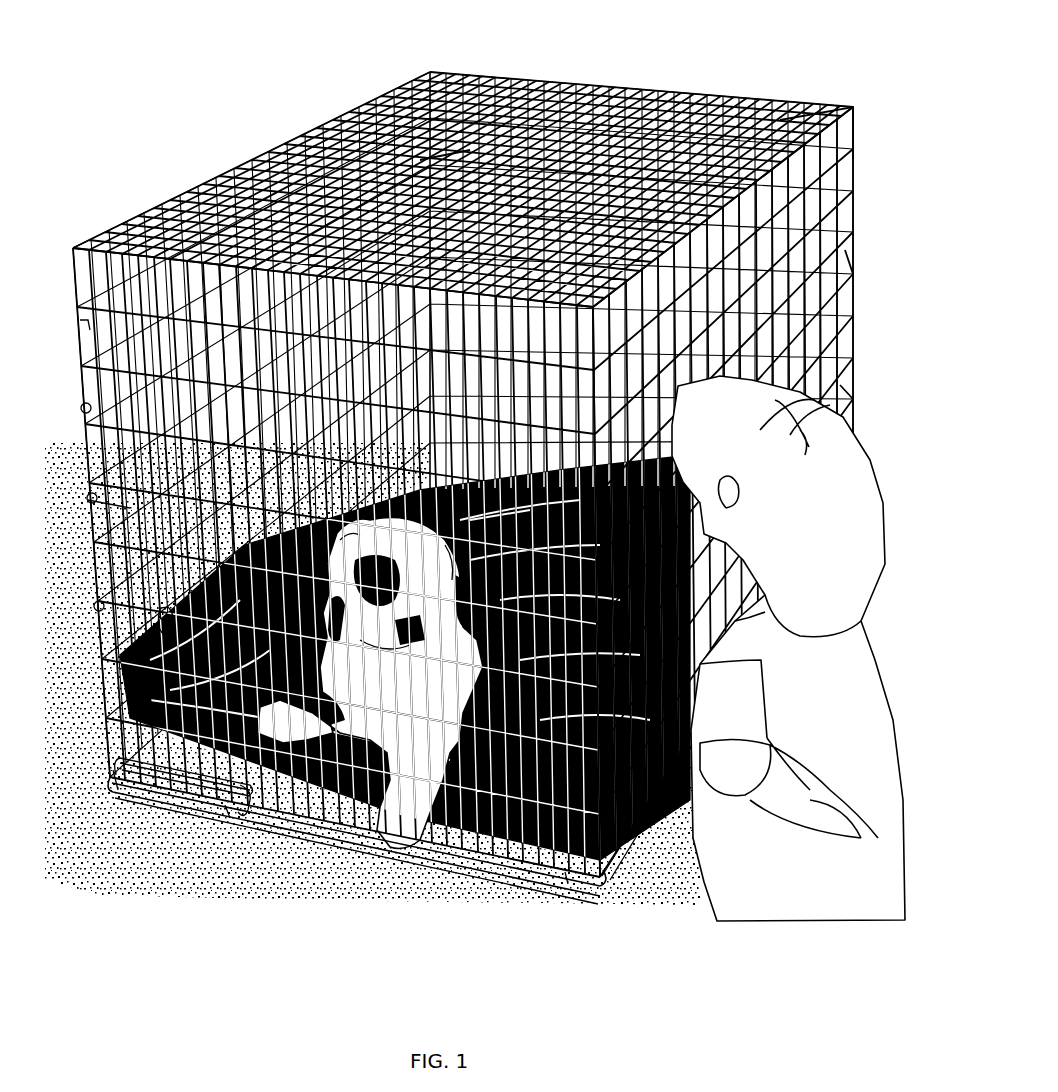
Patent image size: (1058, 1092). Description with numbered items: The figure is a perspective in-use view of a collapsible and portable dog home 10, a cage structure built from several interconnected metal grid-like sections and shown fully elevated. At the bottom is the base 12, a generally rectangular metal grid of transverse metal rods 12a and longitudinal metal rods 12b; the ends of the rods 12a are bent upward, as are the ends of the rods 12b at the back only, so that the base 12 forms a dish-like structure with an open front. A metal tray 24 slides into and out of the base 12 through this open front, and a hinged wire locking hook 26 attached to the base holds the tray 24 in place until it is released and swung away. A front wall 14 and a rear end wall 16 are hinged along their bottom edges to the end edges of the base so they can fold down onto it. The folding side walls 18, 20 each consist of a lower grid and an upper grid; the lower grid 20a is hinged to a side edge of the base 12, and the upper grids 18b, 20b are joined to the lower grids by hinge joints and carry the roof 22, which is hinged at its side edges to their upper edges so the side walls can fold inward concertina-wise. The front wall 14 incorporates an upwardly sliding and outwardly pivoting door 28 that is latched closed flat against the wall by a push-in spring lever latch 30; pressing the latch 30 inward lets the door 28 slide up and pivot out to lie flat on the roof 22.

The dog home 10 is at (473, 438).
The base 12 is at (394, 858).
The transverse metal rods 12a is at (300, 823).
The longitudinal metal rods 12b is at (128, 790).
The front wall 14 is at (482, 828).
The end wall 16 is at (463, 153).
The side wall 18 is at (368, 475).
The upper grid 18b is at (80, 378).
The side wall 20 is at (748, 492).
The lower grid 20a is at (848, 394).
The upper grid 20b is at (846, 276).
The roof 22 is at (790, 122).
The tray 24 is at (508, 840).
The locking hook 26 is at (190, 790).
The door 28 is at (436, 160).
The spring lever latch 30 is at (160, 537).